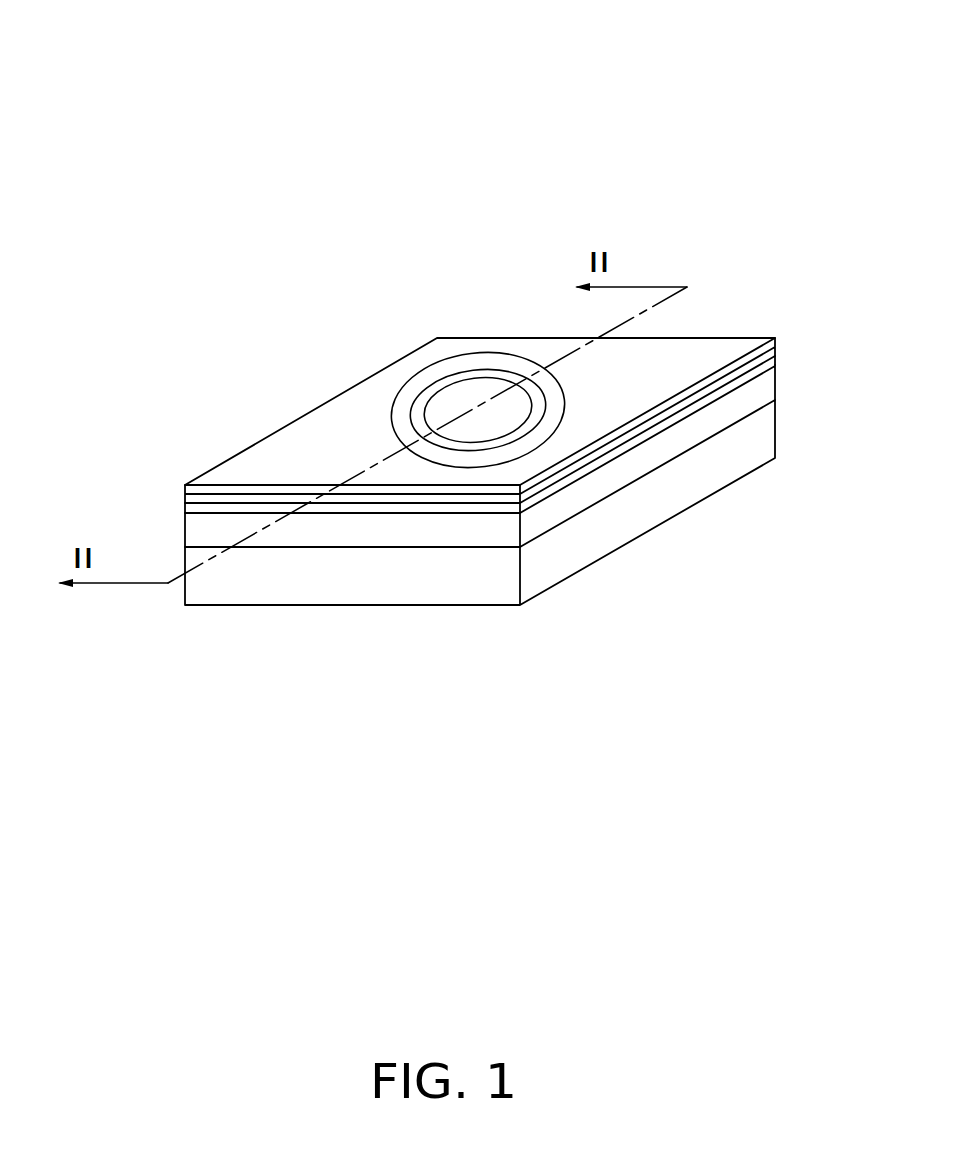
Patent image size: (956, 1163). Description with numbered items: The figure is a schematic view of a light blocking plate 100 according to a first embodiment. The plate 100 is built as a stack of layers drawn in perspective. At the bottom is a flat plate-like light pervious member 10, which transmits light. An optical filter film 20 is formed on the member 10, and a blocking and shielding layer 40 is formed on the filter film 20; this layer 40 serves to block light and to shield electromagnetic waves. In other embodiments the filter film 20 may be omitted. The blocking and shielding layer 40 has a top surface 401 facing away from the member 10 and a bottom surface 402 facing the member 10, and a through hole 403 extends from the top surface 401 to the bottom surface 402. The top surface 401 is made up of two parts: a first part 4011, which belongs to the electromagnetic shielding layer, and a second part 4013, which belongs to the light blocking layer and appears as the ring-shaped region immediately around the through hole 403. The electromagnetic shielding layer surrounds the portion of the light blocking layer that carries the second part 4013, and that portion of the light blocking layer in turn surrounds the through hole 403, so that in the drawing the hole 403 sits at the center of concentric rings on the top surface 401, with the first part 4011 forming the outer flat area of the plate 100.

The light blocking plate 100 is at (320, 56).
The light pervious member 10 is at (563, 557).
The optical filter film 20 is at (693, 430).
The blocking and shielding layer 40 is at (747, 367).
The top surface 401 is at (210, 285).
The first part of the top surface 4011 is at (347, 453).
The second part of the top surface 4013 is at (420, 408).
The bottom surface 402 is at (660, 444).
The through hole 403 is at (463, 393).